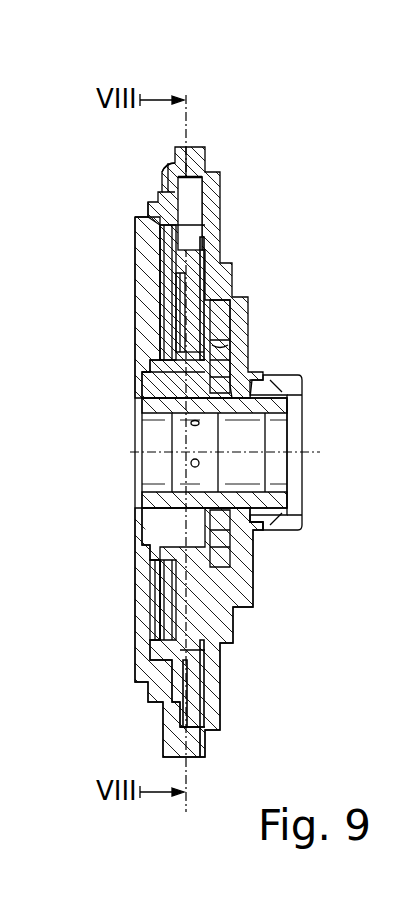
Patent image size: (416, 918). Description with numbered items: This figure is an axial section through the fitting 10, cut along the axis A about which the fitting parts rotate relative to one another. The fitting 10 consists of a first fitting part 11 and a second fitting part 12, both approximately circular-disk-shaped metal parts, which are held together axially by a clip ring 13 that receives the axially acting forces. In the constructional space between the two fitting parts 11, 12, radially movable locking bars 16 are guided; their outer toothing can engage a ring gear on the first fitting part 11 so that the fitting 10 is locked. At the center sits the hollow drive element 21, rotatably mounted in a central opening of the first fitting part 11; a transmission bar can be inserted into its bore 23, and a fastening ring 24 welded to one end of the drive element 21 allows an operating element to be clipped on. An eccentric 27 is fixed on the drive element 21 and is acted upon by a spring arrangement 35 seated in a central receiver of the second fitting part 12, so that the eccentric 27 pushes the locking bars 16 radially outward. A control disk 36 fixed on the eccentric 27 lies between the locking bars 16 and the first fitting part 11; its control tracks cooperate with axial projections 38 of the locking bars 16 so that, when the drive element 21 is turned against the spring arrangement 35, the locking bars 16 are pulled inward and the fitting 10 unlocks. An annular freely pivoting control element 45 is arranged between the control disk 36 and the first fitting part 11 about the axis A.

The fitting 10 is at (238, 185).
The first fitting part 11 is at (134, 232).
The second fitting part 12 is at (222, 220).
The clip ring 13 is at (161, 180).
The locking bar 16 is at (186, 298).
The drive element 21 is at (150, 496).
The bore 23 is at (150, 468).
The fastening ring 24 is at (285, 512).
The eccentric 27 is at (188, 518).
The spring arrangement 35 is at (221, 364).
The control disk 36 is at (180, 320).
The projection 38 is at (168, 258).
The freely pivoting control element 45 is at (162, 584).
The axis A is at (158, 450).